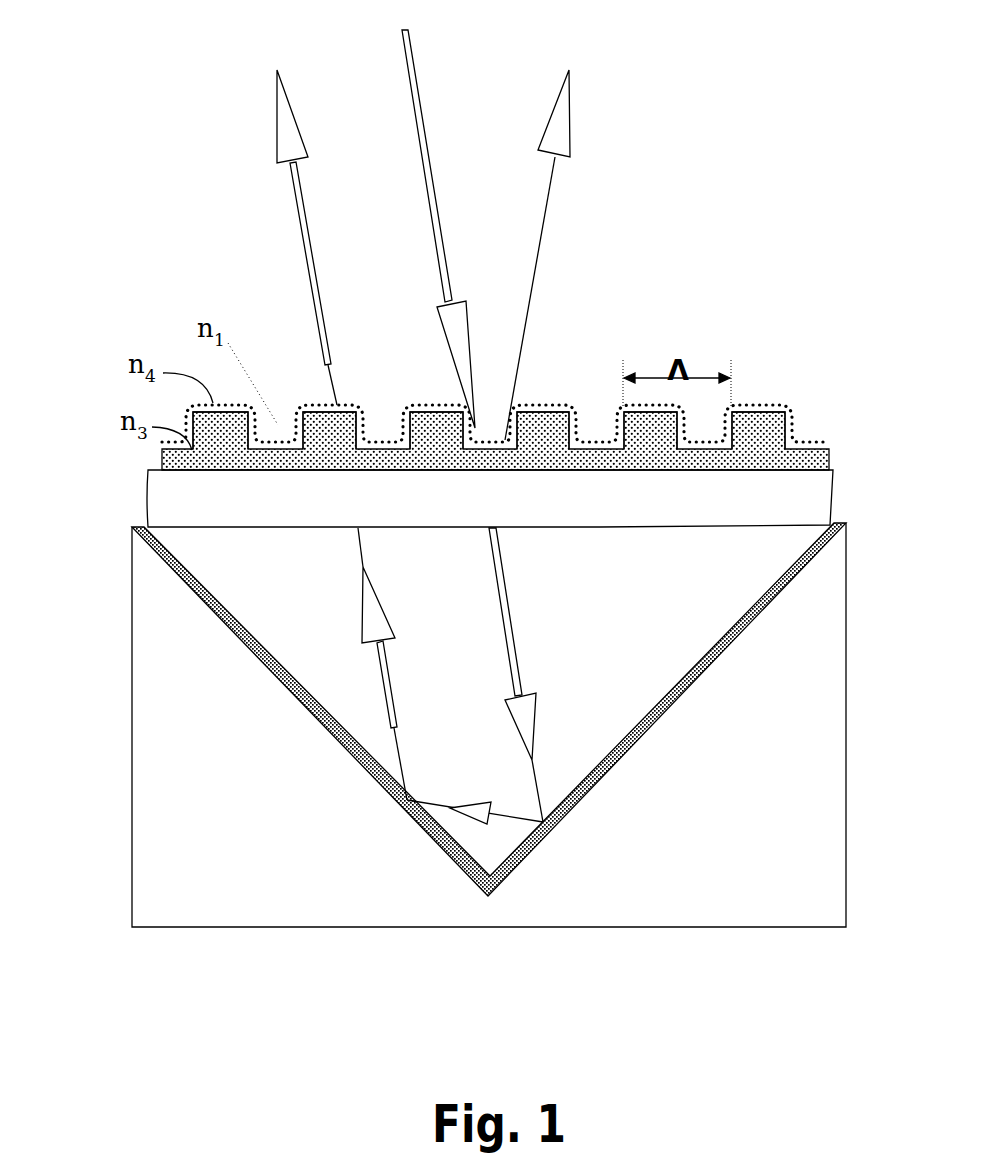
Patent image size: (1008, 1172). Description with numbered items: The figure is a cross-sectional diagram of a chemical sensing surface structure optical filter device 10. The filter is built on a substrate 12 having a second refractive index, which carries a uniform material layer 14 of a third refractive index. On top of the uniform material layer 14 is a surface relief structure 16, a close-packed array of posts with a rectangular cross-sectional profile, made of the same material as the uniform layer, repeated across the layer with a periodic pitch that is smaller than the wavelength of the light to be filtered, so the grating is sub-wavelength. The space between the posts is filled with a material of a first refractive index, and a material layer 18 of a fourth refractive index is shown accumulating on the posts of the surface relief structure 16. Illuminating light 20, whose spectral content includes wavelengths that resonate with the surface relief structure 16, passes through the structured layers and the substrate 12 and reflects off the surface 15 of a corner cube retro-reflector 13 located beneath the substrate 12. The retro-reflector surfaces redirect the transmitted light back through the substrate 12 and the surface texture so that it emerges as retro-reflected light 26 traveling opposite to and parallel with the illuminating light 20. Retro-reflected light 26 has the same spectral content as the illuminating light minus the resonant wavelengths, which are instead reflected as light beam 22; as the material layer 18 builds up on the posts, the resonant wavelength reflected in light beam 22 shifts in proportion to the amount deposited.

The device 10 is at (100, 505).
The substrate 12 is at (815, 498).
The corner cube retro-reflector 13 is at (825, 722).
The uniform material layer 14 is at (817, 457).
The surface of the corner cube retro-reflector 15 is at (807, 578).
The surface relief structure 16 is at (780, 420).
The material layer 18 is at (757, 402).
The illuminating light 20 is at (400, 42).
The light beam 22 is at (569, 120).
The retro-reflected light 26 is at (278, 128).